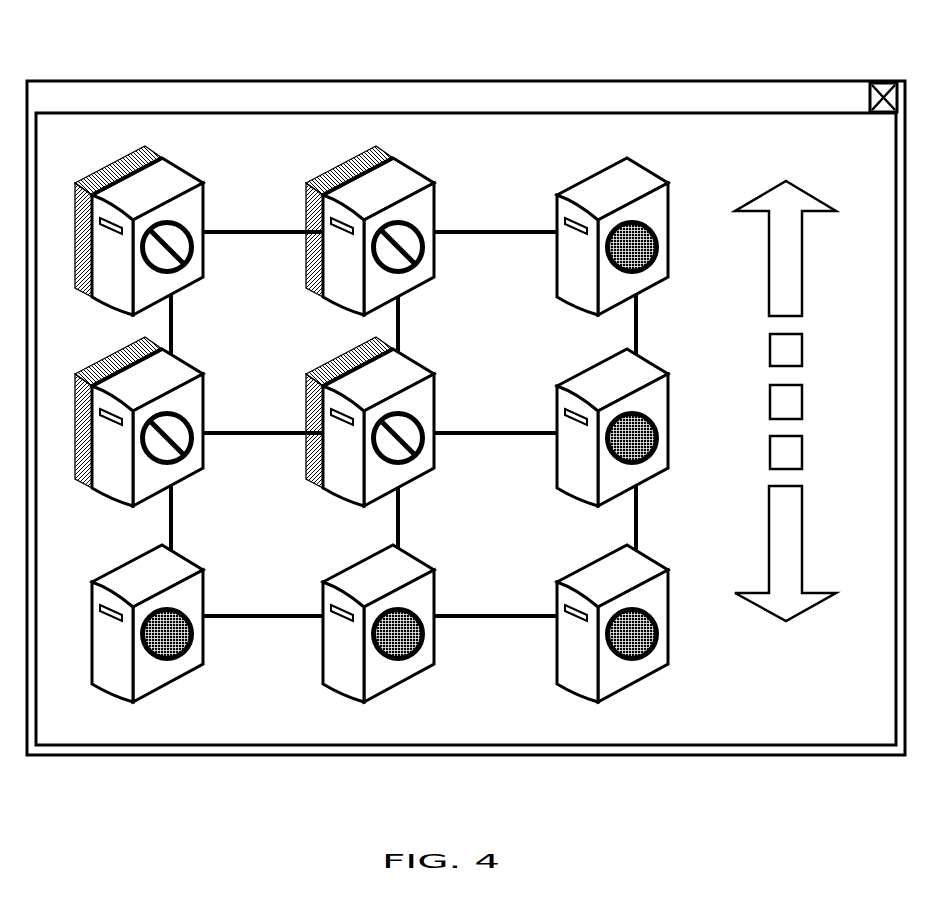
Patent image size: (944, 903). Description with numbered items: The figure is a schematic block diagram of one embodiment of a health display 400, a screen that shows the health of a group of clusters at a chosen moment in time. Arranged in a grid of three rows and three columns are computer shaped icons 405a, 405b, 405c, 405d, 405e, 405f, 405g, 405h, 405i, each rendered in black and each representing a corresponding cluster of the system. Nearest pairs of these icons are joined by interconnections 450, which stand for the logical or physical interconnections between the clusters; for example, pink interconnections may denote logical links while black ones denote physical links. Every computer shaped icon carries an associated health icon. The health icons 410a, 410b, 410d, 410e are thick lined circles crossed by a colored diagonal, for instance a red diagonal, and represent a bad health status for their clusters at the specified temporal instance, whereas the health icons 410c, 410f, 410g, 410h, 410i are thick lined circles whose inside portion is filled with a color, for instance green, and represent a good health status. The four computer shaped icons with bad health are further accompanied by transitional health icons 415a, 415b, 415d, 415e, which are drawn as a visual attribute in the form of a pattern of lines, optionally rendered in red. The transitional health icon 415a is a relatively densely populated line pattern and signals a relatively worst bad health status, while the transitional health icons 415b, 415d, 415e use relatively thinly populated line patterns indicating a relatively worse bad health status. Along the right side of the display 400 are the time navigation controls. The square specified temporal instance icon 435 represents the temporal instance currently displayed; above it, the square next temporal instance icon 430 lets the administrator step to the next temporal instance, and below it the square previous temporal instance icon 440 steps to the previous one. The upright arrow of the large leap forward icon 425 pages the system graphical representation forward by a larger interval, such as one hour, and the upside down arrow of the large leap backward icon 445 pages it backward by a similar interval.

The health display 400 is at (110, 58).
The computer shaped icon 405a is at (156, 229).
The computer shaped icon 405b is at (387, 229).
The computer shaped icon 405c is at (643, 230).
The computer shaped icon 405d is at (156, 420).
The computer shaped icon 405e is at (387, 420).
The computer shaped icon 405f is at (641, 421).
The computer shaped icon 405g is at (179, 617).
The computer shaped icon 405h is at (410, 617).
The computer shaped icon 405i is at (640, 617).
The health icon 410a is at (204, 231).
The health icon 410b is at (435, 231).
The health icon 410c is at (669, 231).
The health icon 410d is at (204, 422).
The health icon 410e is at (435, 422).
The health icon 410f is at (667, 422).
The health icon 410g is at (204, 618).
The health icon 410h is at (435, 618).
The health icon 410i is at (666, 618).
The transitional health icon 415a is at (104, 220).
The transitional health icon 415b is at (335, 220).
The transitional health icon 415d is at (104, 411).
The transitional health icon 415e is at (335, 411).
The large leap forward icon 425 is at (803, 252).
The next temporal instance icon 430 is at (803, 346).
The specified temporal instance icon 435 is at (803, 392).
The previous temporal instance icon 440 is at (803, 445).
The large leap backward icon 445 is at (803, 514).
The interconnection 450 is at (287, 233).